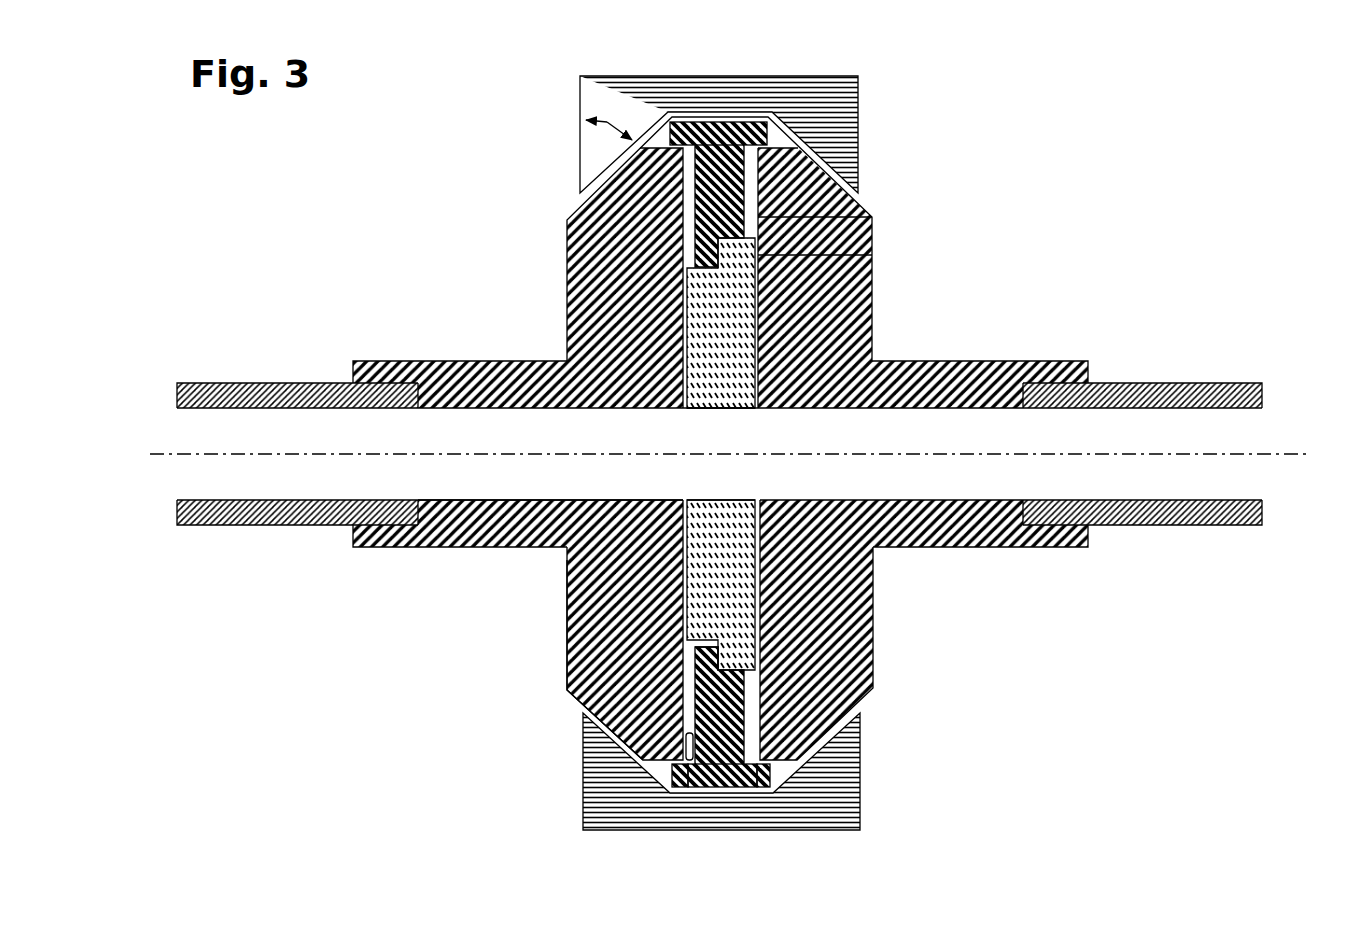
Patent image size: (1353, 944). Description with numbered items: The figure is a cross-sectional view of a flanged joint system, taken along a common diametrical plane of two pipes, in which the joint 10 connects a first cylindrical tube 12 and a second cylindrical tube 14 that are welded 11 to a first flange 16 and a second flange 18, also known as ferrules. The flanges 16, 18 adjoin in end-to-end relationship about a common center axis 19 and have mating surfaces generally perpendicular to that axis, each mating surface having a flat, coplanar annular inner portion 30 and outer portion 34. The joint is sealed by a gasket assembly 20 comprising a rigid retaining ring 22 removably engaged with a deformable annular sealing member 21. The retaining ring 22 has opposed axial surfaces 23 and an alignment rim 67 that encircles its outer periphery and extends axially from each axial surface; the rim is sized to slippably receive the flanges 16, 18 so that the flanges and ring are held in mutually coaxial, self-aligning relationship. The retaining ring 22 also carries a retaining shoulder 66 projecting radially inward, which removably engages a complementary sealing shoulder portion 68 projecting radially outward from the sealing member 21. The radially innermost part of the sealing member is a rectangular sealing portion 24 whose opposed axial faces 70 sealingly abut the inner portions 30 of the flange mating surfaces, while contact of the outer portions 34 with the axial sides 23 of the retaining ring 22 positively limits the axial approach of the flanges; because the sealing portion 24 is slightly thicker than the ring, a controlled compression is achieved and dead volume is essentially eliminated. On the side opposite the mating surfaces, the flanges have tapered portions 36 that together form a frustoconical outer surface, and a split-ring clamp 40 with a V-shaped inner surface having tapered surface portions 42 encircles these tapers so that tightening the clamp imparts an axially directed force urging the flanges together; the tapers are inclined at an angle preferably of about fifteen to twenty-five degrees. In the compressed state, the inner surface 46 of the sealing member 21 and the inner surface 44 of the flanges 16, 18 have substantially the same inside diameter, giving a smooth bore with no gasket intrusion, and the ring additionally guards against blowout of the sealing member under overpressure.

The joint 10 is at (998, 183).
The weld 11 is at (351, 381).
The first cylindrical tube 12 is at (265, 382).
The second cylindrical tube 14 is at (1172, 382).
The first flange 16 is at (425, 549).
The second flange 18 is at (977, 549).
The common center axis 19 is at (1273, 457).
The gasket assembly 20 is at (873, 690).
The sealing member 21 is at (703, 409).
The retaining ring 22 is at (735, 710).
The axial surfaces 23 is at (853, 210).
The sealing portion 24 is at (728, 330).
The annular inner portion 30 is at (680, 538).
The outer portion 34 is at (685, 788).
The tapered portions 36 is at (733, 613).
The split-ring clamp 40 is at (862, 820).
The tapered surface portions 42 is at (622, 750).
The inner surface of flanges 44 is at (570, 500).
The inner surface of sealing member 46 is at (725, 500).
The retaining shoulder 66 is at (693, 662).
The alignment rim 67 is at (757, 786).
The sealing shoulder portion 68 is at (872, 247).
The axial faces 70 is at (857, 315).